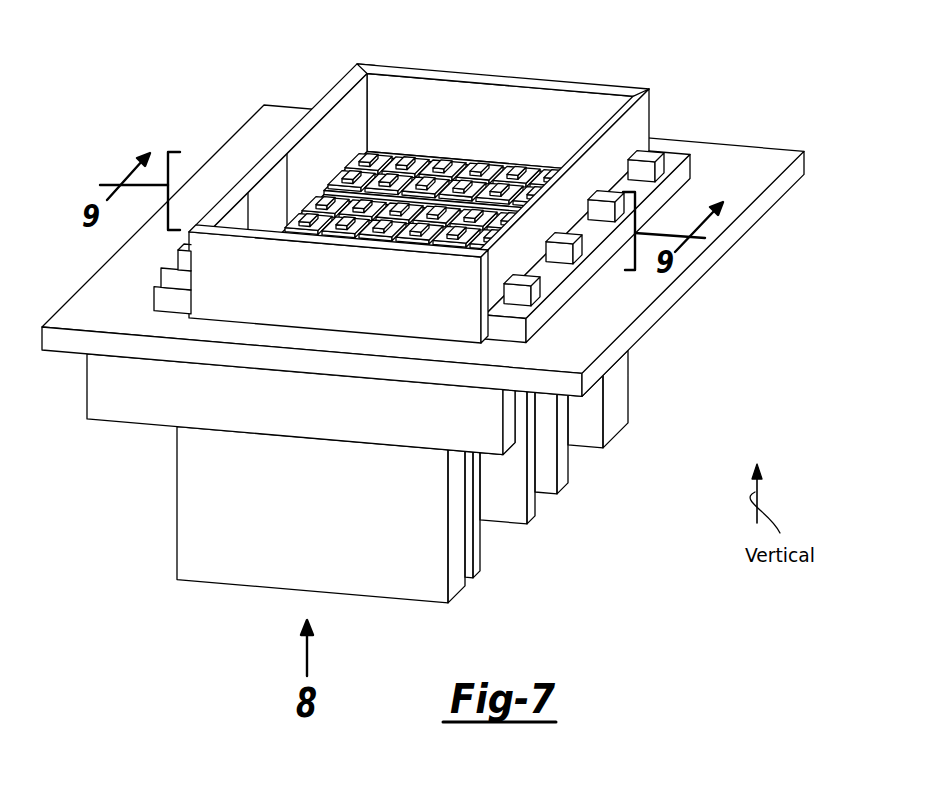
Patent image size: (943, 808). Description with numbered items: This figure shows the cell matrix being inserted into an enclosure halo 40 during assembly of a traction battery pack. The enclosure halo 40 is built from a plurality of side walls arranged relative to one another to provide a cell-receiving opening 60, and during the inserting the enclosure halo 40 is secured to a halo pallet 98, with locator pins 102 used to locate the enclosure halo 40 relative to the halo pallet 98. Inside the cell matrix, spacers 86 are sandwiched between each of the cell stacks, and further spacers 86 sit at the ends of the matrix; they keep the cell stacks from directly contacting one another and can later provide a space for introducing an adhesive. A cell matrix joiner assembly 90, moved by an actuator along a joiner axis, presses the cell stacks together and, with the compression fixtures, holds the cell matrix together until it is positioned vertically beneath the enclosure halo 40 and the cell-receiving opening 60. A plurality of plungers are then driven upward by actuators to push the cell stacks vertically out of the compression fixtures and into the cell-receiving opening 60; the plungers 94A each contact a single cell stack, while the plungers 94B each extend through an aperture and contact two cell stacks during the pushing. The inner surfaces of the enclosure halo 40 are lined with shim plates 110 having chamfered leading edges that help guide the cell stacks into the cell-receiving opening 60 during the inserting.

The enclosure halo 40 is at (628, 127).
The cell-receiving opening 60 is at (434, 98).
The spacers 86 is at (362, 195).
The cell matrix joiner assembly 90 is at (114, 397).
The plungers 94A is at (457, 562).
The plungers 94B is at (487, 530).
The halo pallet 98 is at (730, 167).
The locator pins 102 is at (543, 288).
The shim plates 110 is at (348, 118).